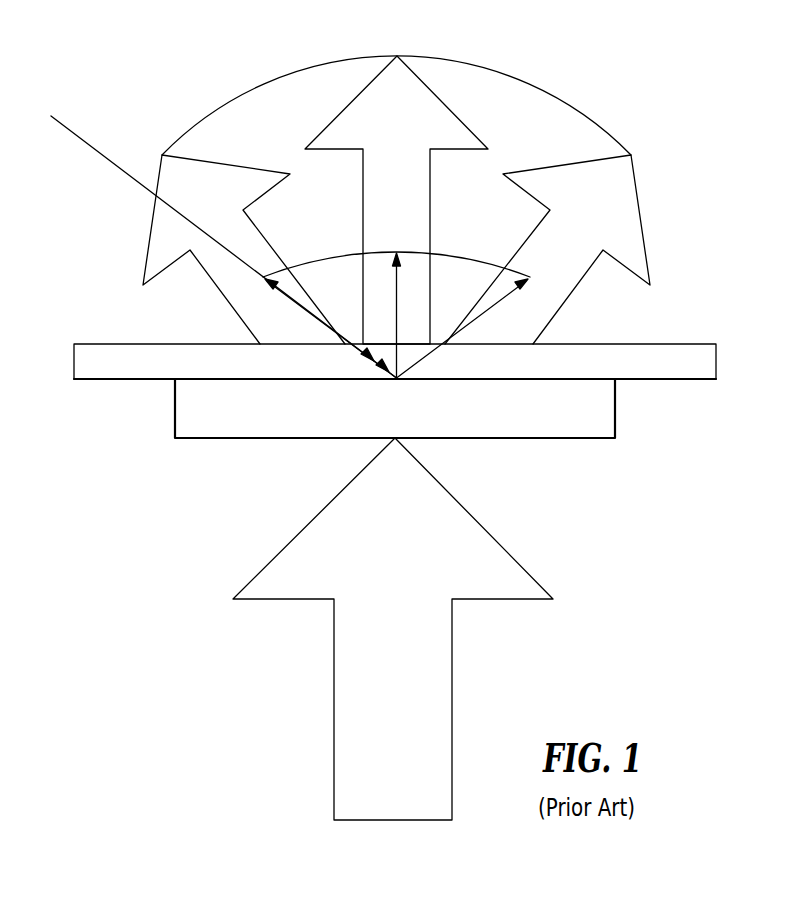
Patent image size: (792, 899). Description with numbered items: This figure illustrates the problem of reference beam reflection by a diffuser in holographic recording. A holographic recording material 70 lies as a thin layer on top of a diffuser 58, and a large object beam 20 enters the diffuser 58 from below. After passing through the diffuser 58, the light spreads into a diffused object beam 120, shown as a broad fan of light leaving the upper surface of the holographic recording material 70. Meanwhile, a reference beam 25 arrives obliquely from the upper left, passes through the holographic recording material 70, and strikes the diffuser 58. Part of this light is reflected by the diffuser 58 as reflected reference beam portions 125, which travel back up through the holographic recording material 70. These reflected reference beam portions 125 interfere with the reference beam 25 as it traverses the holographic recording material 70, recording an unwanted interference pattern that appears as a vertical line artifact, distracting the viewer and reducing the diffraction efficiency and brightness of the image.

The object beam 20 is at (495, 538).
The reference beam 25 is at (62, 124).
The diffuser 58 is at (615, 425).
The holographic recording material 70 is at (716, 368).
The diffused object beam 120 is at (512, 73).
The reflected reference beam portions 125 is at (462, 258).